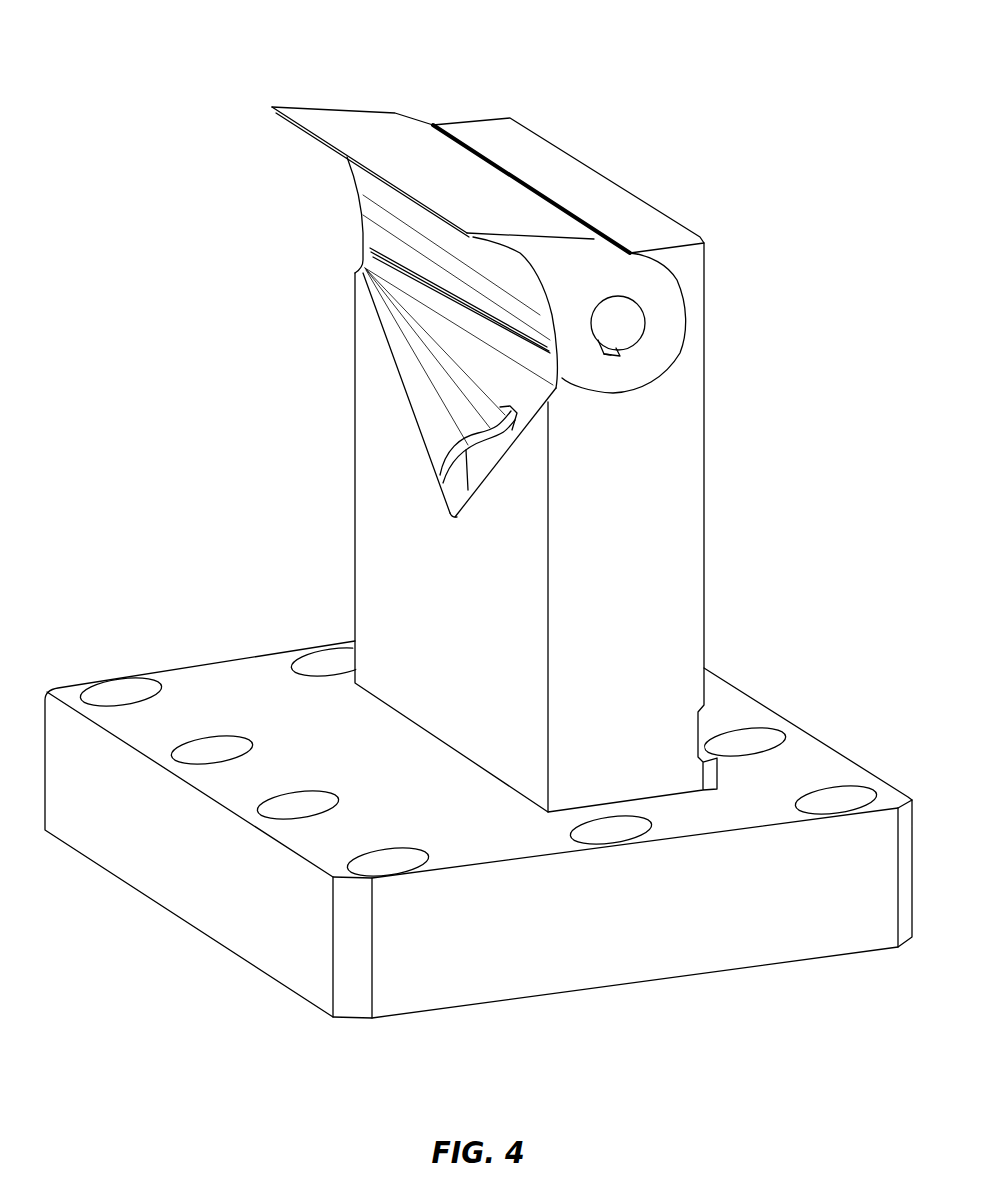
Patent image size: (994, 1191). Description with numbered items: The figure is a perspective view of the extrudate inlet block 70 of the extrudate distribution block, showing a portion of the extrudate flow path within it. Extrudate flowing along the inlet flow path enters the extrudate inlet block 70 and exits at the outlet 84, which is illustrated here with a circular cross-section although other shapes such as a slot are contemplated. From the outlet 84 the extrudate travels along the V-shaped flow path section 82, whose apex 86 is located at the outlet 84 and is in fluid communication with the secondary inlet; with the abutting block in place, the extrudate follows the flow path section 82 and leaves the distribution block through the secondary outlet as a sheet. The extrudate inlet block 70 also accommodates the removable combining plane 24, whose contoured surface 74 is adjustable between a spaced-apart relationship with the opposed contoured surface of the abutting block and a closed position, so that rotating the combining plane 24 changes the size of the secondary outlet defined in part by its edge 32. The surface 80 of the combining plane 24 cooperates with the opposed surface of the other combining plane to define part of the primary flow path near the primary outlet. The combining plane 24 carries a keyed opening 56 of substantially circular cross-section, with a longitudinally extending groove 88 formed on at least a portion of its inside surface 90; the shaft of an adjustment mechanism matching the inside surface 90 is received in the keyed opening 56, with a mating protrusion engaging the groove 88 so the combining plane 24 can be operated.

The combining plane 24 is at (615, 355).
The edge of combining plane 32 is at (313, 140).
The keyed opening 56 is at (631, 328).
The extrudate inlet block 70 is at (704, 512).
The contoured surface 74 is at (400, 212).
The surface of combining plane 80 is at (362, 133).
The V-shaped flow path section 82 is at (398, 352).
The outlet 84 is at (487, 450).
The apex 86 is at (450, 514).
The groove 88 is at (603, 352).
The inside surface of keyed opening 90 is at (641, 307).